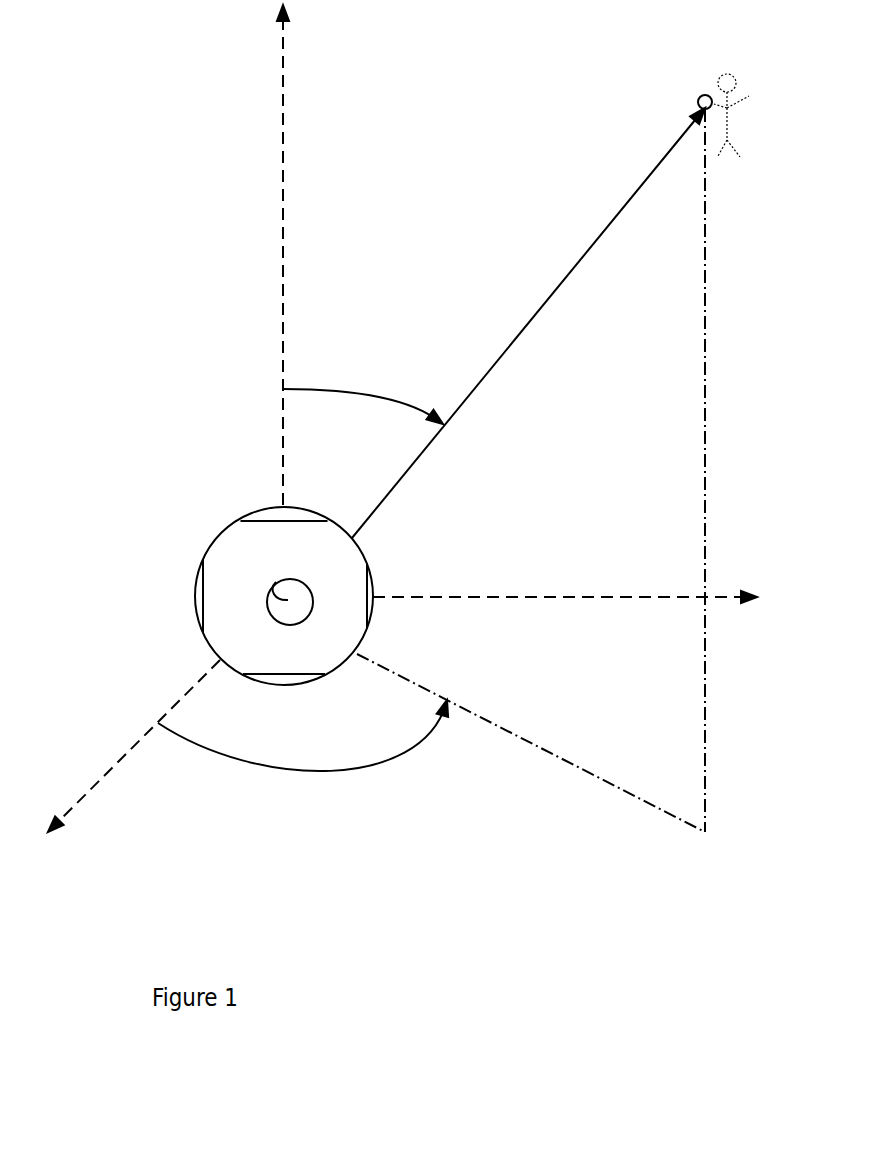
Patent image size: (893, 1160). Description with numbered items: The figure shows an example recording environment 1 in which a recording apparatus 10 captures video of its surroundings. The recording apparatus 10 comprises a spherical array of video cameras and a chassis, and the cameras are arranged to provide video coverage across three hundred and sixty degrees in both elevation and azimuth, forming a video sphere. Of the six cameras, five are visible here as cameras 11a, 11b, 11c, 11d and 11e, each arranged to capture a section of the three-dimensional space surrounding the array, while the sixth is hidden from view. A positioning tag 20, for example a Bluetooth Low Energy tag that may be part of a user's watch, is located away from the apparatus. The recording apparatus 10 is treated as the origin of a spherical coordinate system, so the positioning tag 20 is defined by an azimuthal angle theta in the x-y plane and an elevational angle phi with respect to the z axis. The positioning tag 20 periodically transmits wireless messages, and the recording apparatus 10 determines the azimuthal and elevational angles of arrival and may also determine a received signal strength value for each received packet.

The recording environment 1 is at (710, 993).
The recording apparatus 10 is at (260, 599).
The video camera 11a is at (307, 520).
The video camera 11b is at (304, 675).
The video camera 11c is at (371, 579).
The video camera 11d is at (273, 583).
The video camera 11e is at (203, 613).
The positioning tag 20 is at (698, 103).